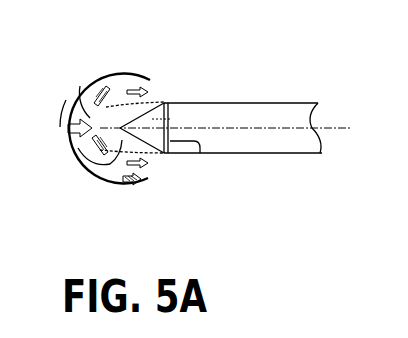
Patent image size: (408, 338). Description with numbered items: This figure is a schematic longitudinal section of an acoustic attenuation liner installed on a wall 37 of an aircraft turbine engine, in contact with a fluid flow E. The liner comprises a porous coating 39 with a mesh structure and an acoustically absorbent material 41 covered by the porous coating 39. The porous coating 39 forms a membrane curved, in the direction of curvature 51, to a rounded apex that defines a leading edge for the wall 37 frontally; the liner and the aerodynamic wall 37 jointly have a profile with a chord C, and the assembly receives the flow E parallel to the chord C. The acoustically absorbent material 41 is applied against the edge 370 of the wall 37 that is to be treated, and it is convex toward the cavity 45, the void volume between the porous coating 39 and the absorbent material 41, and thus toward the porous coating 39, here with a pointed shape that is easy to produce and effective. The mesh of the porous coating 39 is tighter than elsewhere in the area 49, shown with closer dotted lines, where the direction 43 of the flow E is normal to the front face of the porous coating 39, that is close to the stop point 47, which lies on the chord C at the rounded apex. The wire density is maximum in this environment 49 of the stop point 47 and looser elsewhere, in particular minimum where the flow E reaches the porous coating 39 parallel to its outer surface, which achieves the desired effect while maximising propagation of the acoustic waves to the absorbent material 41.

The wall 37 is at (268, 145).
The edge 370 is at (197, 160).
The porous coating 39 is at (156, 98).
The acoustically absorbent material 41 is at (172, 117).
The direction of flow 43 is at (58, 108).
The cavity 45 is at (100, 170).
The stop point 47 is at (78, 152).
The area 49 is at (80, 86).
The direction of curvature 51 is at (113, 72).
The chord C is at (333, 127).
The fluid flow E is at (35, 128).